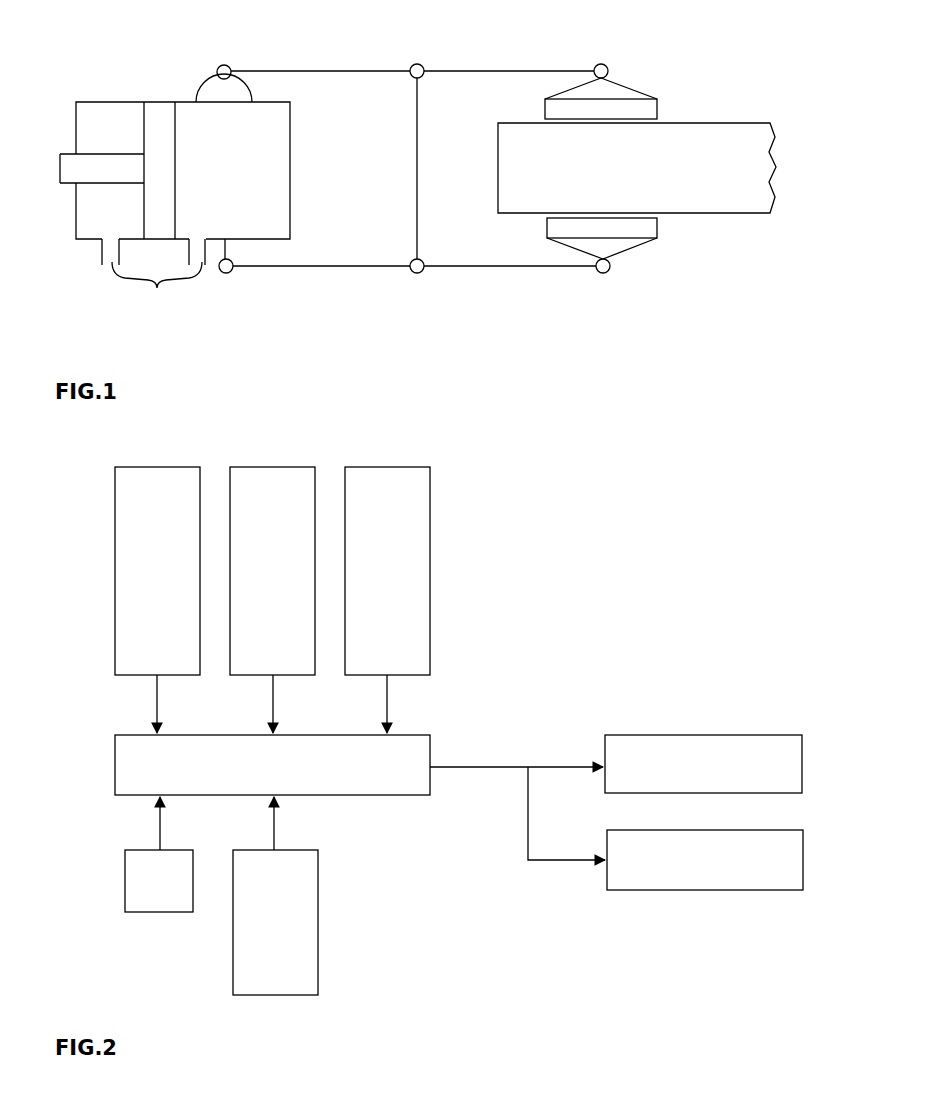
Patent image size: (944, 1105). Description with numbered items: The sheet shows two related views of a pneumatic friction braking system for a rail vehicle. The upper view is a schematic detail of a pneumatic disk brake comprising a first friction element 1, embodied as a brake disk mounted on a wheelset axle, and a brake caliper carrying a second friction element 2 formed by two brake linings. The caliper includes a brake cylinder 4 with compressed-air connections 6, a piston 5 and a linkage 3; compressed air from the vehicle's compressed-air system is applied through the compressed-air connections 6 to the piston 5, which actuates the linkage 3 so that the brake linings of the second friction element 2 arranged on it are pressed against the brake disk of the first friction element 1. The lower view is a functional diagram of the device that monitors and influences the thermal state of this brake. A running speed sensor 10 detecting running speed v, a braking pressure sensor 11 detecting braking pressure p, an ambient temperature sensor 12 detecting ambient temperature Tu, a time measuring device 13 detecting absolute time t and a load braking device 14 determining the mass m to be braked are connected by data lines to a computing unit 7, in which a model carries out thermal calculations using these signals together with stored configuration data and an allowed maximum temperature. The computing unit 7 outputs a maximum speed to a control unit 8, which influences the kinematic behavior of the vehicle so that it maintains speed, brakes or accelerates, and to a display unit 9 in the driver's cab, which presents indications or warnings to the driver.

In FIG. 1, the first friction element 1 is at (728, 132).
In FIG. 1, the second friction element 2 is at (650, 108).
In FIG. 1, the linkage 3 is at (500, 70).
In FIG. 1, the brake cylinder 4 is at (285, 168).
In FIG. 1, the piston 5 is at (158, 110).
In FIG. 1, the compressed-air connections 6 is at (157, 290).
In FIG. 2, the computing unit 7 is at (115, 760).
In FIG. 2, the control unit 8 is at (700, 733).
In FIG. 2, the display unit 9 is at (703, 892).
In FIG. 2, the running speed sensor 10 is at (158, 465).
In FIG. 2, the braking pressure sensor 11 is at (273, 465).
In FIG. 2, the ambient temperature sensor 12 is at (388, 465).
In FIG. 2, the time measuring device 13 is at (320, 923).
In FIG. 2, the load braking device 14 is at (152, 916).